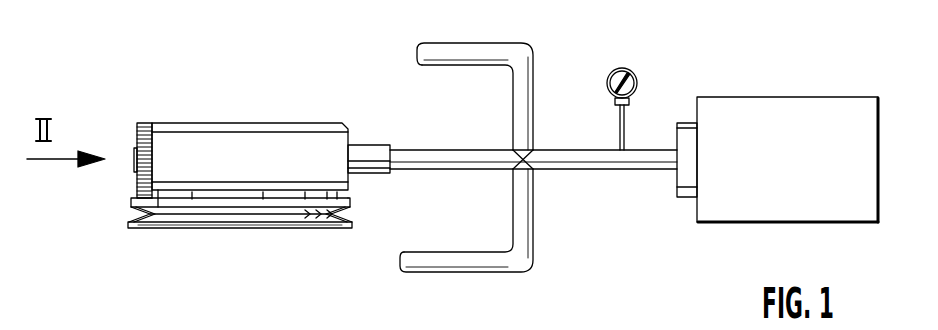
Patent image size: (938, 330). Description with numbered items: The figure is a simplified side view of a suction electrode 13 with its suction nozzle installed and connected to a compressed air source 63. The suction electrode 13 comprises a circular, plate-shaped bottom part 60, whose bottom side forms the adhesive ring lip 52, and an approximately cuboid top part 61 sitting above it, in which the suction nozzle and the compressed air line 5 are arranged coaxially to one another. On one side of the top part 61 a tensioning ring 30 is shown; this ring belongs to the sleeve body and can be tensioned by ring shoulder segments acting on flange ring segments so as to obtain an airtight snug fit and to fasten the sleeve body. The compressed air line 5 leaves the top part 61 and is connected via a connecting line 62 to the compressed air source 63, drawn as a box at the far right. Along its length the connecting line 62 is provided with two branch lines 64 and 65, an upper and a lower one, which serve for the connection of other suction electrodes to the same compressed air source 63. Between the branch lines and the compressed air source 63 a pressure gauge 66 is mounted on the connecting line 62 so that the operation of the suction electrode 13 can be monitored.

The suction electrode 13 is at (233, 104).
The tensioning ring 30 is at (143, 123).
The top part 61 is at (310, 128).
The compressed air line 5 is at (372, 146).
The bottom part 60 is at (350, 197).
The adhesive ring lip 52 is at (173, 230).
The connecting line 62 is at (455, 169).
The branch line 64 is at (533, 50).
The branch line 65 is at (534, 241).
The pressure gauge 66 is at (637, 83).
The compressed air source 63 is at (820, 110).